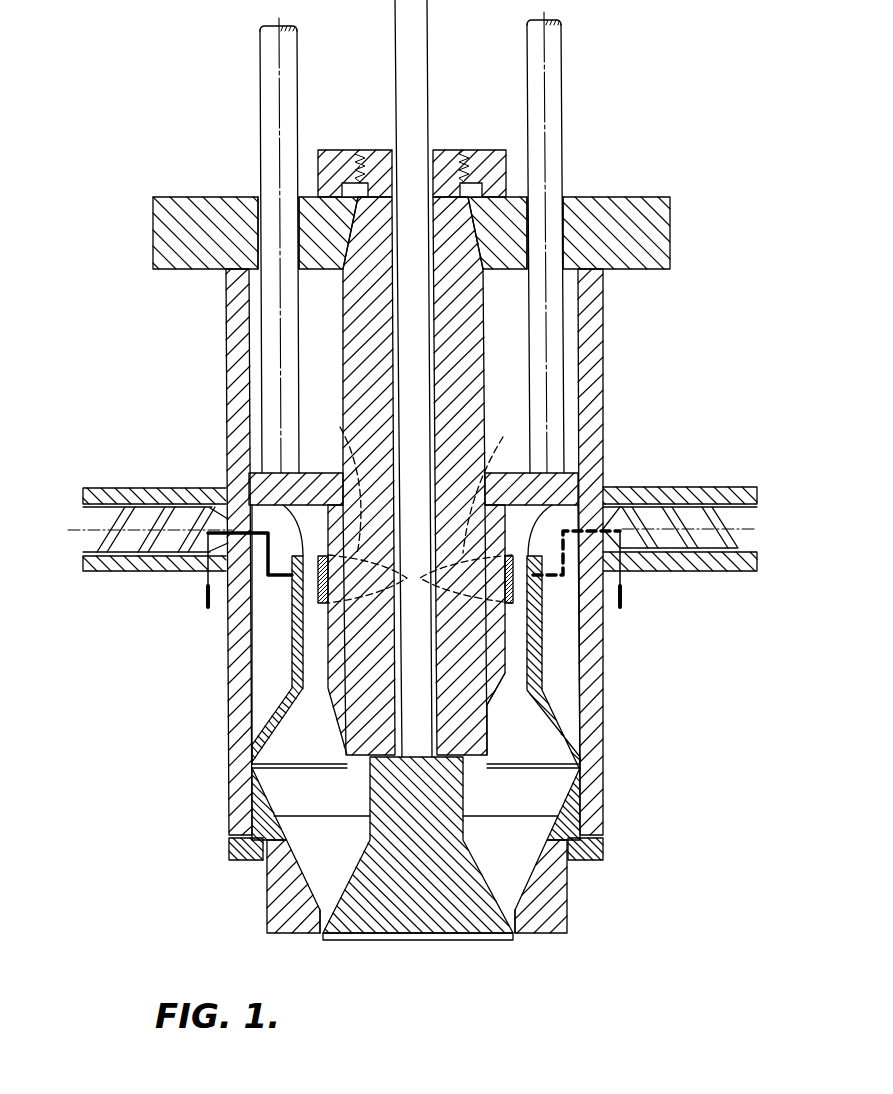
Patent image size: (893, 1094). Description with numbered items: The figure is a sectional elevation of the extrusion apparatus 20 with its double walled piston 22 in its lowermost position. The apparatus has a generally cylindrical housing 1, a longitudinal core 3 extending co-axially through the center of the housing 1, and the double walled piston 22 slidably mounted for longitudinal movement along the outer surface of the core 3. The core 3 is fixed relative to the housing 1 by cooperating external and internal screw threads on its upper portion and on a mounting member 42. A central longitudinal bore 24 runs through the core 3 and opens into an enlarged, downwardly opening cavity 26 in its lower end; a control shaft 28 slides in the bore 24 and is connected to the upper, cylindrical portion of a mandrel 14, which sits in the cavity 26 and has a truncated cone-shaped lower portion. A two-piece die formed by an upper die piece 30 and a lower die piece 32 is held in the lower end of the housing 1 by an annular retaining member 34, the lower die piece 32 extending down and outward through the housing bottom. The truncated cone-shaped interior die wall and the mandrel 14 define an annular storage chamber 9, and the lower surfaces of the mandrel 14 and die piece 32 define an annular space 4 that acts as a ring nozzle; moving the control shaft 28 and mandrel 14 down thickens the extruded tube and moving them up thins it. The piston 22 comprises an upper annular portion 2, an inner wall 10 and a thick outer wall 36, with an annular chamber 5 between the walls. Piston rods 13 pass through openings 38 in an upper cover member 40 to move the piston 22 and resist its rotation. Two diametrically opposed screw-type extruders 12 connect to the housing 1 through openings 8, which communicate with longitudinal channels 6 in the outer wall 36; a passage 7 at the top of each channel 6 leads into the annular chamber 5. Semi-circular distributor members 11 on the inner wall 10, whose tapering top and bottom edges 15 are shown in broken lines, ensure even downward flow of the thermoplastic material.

The cylindrical housing 1 is at (432, 601).
The upper annular portion 2 is at (566, 486).
The longitudinal core 3 is at (357, 303).
The annular space 4 is at (513, 922).
The annular chamber 5 is at (536, 639).
The longitudinal channel 6 is at (267, 658).
The opening or passage 7 is at (302, 534).
The opening 8 is at (237, 510).
The annular storage chamber 9 is at (278, 778).
The inner piston wall 10 is at (492, 686).
The distributor member 11 is at (322, 606).
The screw-type extruder 12 is at (118, 488).
The piston rod 13 is at (273, 124).
The mandrel 14 is at (398, 920).
The top and bottom edges 15 is at (341, 436).
The extrusion apparatus 20 is at (668, 319).
The double walled piston 22 is at (290, 639).
The central longitudinal bore 24 is at (426, 161).
The cavity 26 is at (452, 770).
The control shaft 28 is at (418, 35).
The upper die piece 30 is at (587, 790).
The lower die piece 32 is at (560, 900).
The annular retaining member 34 is at (240, 852).
The outer piston wall 36 is at (606, 658).
The opening 38 is at (259, 200).
The upper cover member 40 is at (660, 241).
The mounting member 42 is at (330, 158).